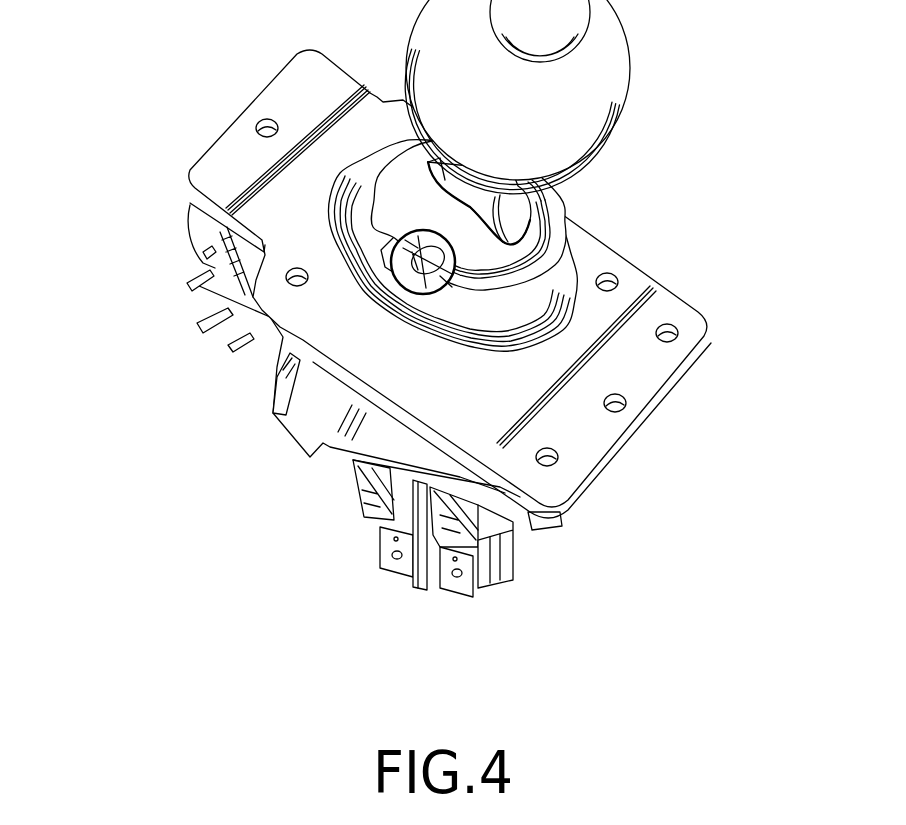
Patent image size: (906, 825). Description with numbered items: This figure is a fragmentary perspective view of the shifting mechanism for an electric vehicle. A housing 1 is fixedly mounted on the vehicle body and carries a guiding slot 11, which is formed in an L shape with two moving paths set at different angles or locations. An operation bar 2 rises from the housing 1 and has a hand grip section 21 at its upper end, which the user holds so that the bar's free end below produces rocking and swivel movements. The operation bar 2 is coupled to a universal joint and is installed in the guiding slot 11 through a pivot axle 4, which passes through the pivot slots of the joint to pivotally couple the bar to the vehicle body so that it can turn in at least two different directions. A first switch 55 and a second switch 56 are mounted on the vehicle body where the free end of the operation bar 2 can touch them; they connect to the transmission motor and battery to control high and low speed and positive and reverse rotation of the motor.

The housing 1 is at (623, 370).
The operation bar 2 is at (493, 193).
The pivot axle 4 is at (410, 270).
The guiding slot 11 is at (517, 216).
The hand grip section 21 is at (613, 88).
The first switch 55 is at (187, 290).
The second switch 56 is at (493, 527).